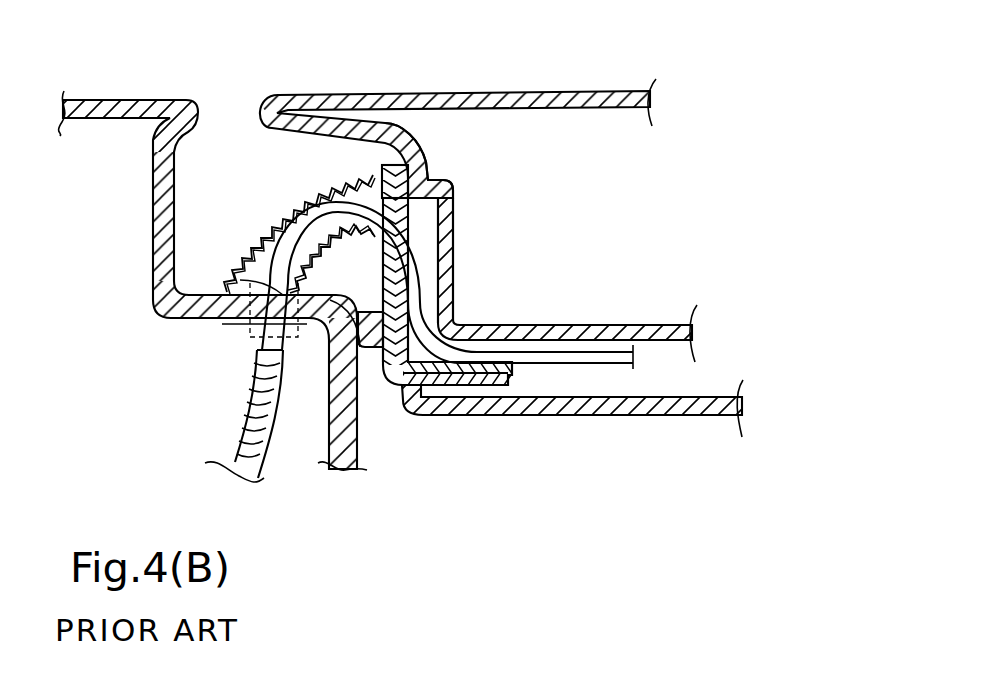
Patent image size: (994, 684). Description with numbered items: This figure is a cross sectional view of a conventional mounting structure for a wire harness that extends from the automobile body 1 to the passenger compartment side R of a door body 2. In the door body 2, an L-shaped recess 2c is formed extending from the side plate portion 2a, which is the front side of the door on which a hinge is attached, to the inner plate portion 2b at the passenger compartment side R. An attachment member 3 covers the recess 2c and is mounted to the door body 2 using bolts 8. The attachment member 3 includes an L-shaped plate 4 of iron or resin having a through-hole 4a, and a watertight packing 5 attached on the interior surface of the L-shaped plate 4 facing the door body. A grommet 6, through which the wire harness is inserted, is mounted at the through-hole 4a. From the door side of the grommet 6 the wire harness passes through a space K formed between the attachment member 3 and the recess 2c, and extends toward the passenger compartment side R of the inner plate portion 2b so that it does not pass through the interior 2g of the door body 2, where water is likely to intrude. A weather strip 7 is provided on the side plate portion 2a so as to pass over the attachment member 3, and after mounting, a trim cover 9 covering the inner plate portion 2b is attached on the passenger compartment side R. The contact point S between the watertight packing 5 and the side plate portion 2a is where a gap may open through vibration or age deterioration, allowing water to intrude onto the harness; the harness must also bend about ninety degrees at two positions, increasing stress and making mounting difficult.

The automobile body 1 is at (127, 100).
The door body 2 is at (475, 92).
The side plate portion 2a is at (432, 174).
The inner plate portion 2b is at (613, 322).
The L-shaped recess 2c is at (446, 263).
The interior of the door body 2g is at (572, 146).
The attachment member 3 is at (367, 282).
The L-shaped plate 4 is at (392, 370).
The through-hole 4a is at (404, 228).
The watertight packing 5 is at (455, 378).
The grommet 6 is at (297, 204).
The weather strip 7 is at (369, 345).
The bolts 8 is at (380, 177).
The trim cover 9 is at (569, 413).
The contact point S is at (424, 167).
The space K is at (435, 302).
The passenger compartment side R is at (641, 493).